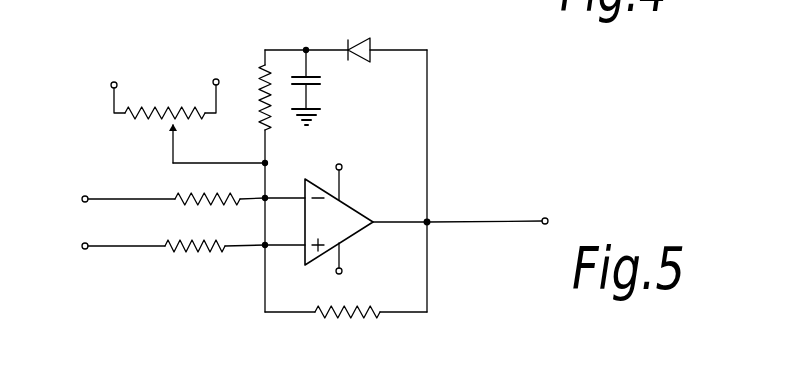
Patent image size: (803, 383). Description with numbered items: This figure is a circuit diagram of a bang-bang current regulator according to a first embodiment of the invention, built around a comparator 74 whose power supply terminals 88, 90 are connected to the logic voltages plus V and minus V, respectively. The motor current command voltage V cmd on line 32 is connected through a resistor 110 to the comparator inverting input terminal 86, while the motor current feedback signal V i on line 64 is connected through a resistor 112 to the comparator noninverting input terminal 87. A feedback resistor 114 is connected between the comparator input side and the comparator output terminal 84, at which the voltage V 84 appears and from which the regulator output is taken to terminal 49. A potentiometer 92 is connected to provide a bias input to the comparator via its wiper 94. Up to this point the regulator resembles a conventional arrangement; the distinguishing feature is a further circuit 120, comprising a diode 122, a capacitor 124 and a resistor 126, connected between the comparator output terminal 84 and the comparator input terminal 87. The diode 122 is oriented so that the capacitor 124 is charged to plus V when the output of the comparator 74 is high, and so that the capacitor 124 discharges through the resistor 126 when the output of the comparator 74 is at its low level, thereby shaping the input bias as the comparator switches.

The line 32 is at (148, 249).
The output terminal 49 is at (508, 220).
The line 64 is at (148, 201).
The comparator 74 is at (347, 215).
The comparator output terminal 84 is at (430, 225).
The comparator inverting input terminal 86 is at (262, 248).
The comparator noninverting input terminal 87 is at (262, 195).
The input power supply terminal 88 is at (335, 166).
The input power supply terminal 90 is at (342, 270).
The potentiometer 92 is at (145, 118).
The wiper 94 is at (186, 163).
The resistor 110 is at (195, 253).
The resistor 112 is at (211, 201).
The feedback resistor 114 is at (330, 315).
The circuit 120 is at (268, 42).
The diode 122 is at (362, 40).
The capacitor 124 is at (312, 84).
The resistor 126 is at (258, 87).